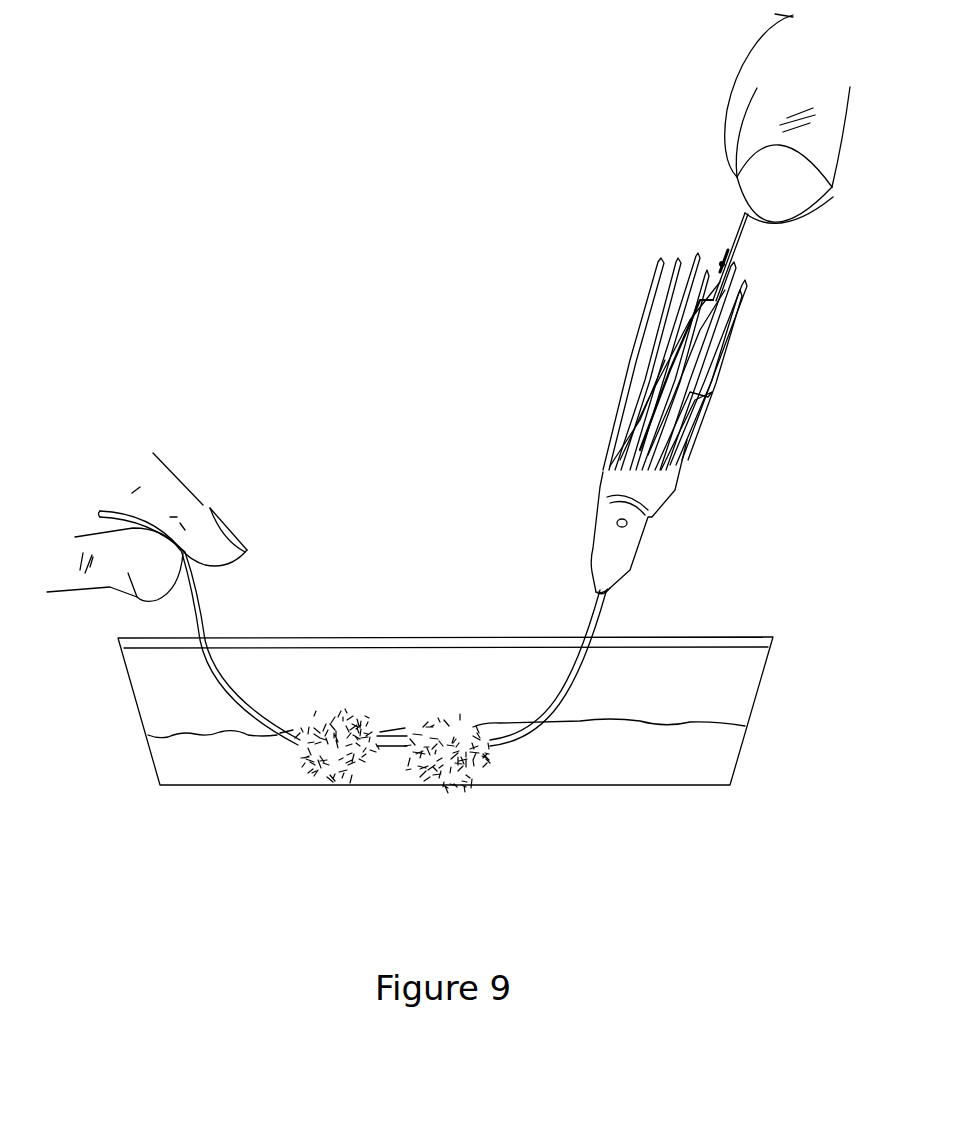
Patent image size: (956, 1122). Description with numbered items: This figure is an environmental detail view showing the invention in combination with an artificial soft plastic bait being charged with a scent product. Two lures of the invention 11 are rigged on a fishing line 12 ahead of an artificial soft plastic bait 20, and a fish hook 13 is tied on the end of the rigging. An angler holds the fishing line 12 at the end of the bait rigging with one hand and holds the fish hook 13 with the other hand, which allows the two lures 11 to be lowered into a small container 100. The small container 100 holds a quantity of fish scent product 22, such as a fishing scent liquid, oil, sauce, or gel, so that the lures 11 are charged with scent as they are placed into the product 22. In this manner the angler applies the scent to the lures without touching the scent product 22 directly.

The lures of the invention 11 is at (440, 760).
The fishing line 12 is at (203, 618).
The fish hook 13 is at (727, 233).
The artificial soft plastic bait 20 is at (622, 411).
The fish scent product 22 is at (648, 718).
The small container 100 is at (660, 787).